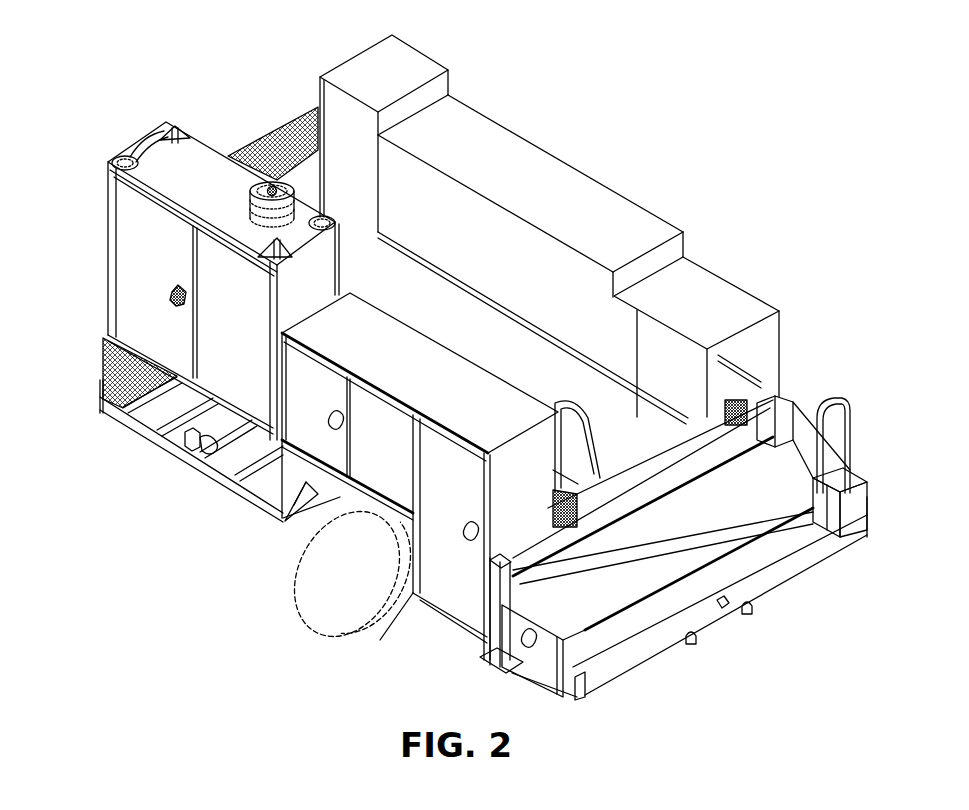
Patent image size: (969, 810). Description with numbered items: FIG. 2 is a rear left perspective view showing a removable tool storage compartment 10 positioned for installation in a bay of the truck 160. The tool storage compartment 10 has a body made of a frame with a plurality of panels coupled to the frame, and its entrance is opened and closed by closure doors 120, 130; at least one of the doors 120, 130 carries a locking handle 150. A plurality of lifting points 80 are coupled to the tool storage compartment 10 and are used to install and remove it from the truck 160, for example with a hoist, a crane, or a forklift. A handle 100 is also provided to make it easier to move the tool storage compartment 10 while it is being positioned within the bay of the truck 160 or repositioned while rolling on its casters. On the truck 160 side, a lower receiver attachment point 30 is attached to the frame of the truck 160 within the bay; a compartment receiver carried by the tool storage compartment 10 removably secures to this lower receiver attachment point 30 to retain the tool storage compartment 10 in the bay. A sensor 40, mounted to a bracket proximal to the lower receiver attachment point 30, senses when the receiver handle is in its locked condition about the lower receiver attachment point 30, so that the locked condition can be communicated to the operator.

The tool storage compartment 10 is at (191, 281).
The lower receiver attachment point 30 is at (194, 452).
The sensor 40 is at (166, 452).
The lifting points 80 is at (167, 127).
The handle 100 is at (145, 148).
The closure door 120 is at (175, 272).
The closure door 130 is at (255, 320).
The locking handle 150 is at (169, 301).
The truck 160 is at (250, 70).